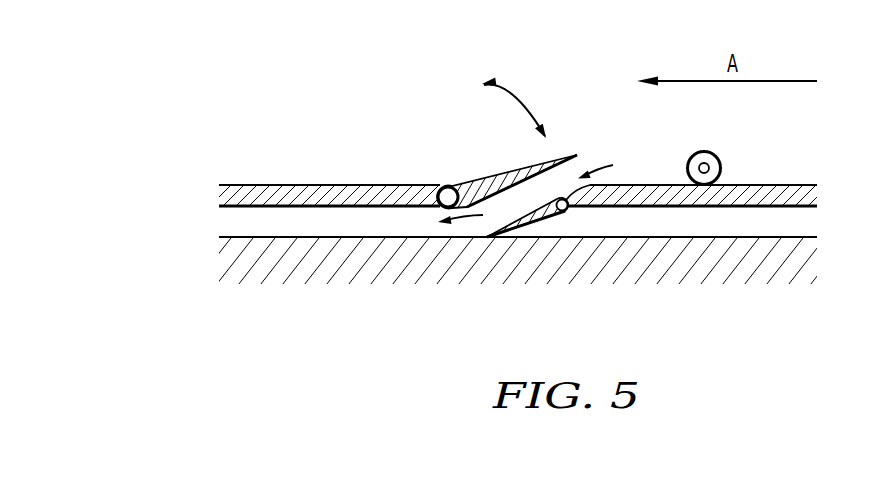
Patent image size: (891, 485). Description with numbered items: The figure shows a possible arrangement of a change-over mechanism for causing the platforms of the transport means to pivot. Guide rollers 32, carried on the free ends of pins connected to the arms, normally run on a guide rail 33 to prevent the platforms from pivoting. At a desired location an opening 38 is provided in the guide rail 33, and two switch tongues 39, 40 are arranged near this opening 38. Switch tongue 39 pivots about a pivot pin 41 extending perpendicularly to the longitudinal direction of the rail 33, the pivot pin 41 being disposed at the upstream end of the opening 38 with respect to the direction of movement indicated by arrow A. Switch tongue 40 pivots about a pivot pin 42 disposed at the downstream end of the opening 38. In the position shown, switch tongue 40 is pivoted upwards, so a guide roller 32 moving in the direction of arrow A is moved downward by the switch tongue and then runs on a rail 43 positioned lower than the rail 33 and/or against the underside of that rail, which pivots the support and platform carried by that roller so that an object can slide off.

The guide roller 32 is at (700, 158).
The guide rail 33 is at (795, 187).
The opening 38 is at (537, 197).
The switch tongue 39 is at (537, 216).
The switch tongue 40 is at (492, 178).
The pivot pin 41 is at (568, 207).
The pivot pin 42 is at (443, 190).
The rail 43 is at (253, 263).